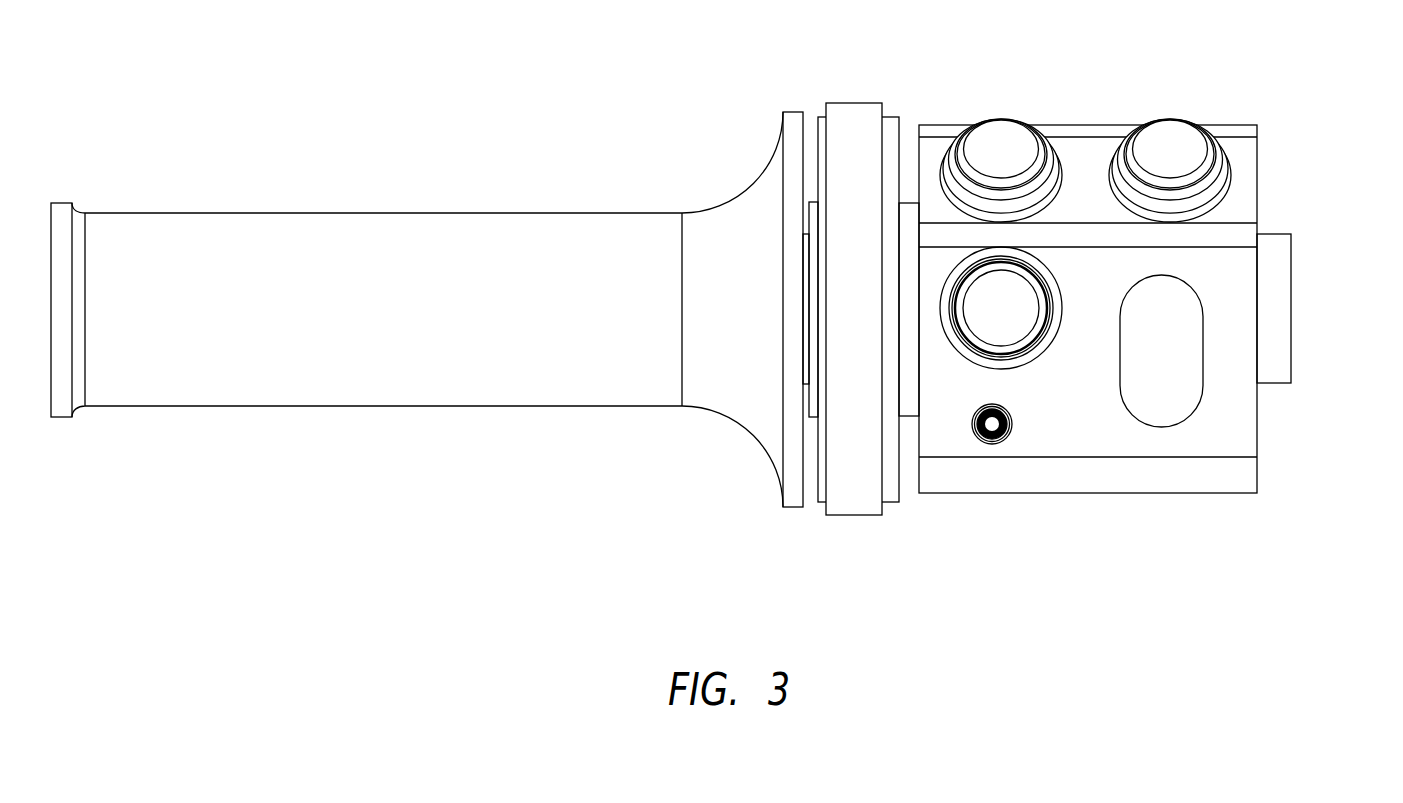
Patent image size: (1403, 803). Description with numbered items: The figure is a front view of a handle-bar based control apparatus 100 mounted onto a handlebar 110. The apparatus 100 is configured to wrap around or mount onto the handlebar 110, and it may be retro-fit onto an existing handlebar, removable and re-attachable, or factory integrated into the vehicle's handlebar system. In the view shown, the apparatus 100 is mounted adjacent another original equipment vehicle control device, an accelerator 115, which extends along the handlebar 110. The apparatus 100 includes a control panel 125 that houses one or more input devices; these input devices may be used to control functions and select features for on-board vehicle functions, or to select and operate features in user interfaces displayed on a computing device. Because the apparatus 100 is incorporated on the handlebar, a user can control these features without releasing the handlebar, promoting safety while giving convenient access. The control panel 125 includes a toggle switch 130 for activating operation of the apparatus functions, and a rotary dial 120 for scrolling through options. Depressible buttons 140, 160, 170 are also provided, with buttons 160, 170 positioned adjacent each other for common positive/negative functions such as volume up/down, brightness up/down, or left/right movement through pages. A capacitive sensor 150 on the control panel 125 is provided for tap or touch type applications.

The handle-bar based control apparatus 100 is at (1160, 323).
The handlebar 110 is at (1292, 310).
The accelerator 115 is at (547, 212).
The rotary dial 120 is at (855, 102).
The control panel 125 is at (1222, 433).
The toggle switch 130 is at (992, 427).
The depressible button 140 is at (1000, 308).
The capacitive sensor 150 is at (1162, 375).
The depressible button 160 is at (997, 141).
The depressible button 170 is at (1167, 140).